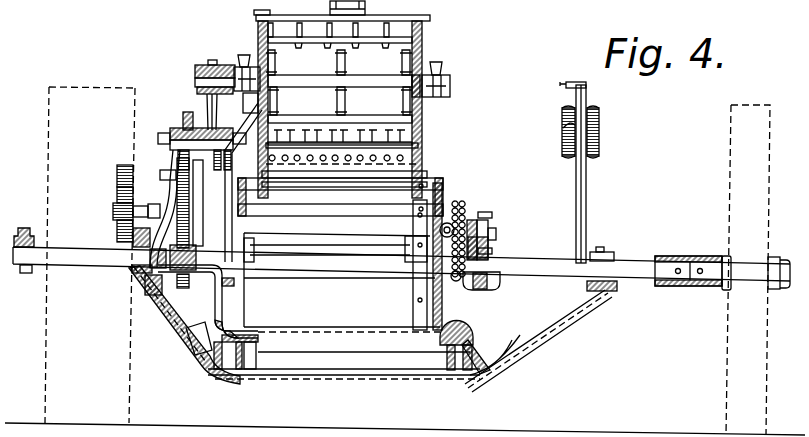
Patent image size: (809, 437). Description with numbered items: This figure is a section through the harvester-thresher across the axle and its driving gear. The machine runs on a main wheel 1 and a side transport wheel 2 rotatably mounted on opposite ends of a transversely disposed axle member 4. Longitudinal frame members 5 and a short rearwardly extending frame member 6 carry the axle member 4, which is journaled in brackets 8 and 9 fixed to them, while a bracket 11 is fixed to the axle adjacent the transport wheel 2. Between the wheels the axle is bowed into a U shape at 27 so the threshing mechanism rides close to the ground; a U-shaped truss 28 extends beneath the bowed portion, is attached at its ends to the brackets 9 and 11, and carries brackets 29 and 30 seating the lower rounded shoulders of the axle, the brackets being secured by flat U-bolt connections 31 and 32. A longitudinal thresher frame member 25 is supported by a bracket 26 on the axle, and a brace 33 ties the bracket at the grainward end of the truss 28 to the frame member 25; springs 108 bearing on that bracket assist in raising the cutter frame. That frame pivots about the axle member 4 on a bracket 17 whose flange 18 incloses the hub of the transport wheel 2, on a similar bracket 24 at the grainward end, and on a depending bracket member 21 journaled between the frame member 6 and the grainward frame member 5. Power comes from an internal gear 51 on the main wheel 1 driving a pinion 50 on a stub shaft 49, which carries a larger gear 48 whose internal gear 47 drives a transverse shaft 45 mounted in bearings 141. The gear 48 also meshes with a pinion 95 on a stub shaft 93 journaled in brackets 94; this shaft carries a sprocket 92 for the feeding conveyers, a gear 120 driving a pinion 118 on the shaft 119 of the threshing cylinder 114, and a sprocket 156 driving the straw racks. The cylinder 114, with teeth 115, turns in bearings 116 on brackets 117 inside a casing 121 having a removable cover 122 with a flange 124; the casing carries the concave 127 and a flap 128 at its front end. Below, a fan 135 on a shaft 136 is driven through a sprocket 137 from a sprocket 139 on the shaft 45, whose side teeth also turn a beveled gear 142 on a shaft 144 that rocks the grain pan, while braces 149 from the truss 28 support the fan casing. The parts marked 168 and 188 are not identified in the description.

The main wheel 1 is at (117, 84).
The side transport wheel 2 is at (731, 141).
The axle member 4 is at (41, 271).
The frame members 5 is at (26, 227).
The frame member 6 is at (158, 252).
The bracket 8 is at (29, 274).
The bracket 9 is at (135, 263).
The bracket 11 is at (610, 254).
The bracket 17 is at (719, 261).
The flange 18 is at (727, 256).
The depending bracket member 21 is at (170, 263).
The bracket 24 is at (782, 257).
The frame member 25 is at (492, 247).
The bracket 26 is at (492, 281).
The bowed portion 27 is at (190, 360).
The truss 28 is at (360, 372).
The bracket 29 is at (213, 370).
The bracket 30 is at (478, 380).
The U-bolt connection 31 is at (222, 296).
The U-bolt connection 32 is at (260, 370).
The brace 33 is at (563, 128).
The transversely disposed shaft 45 is at (492, 230).
The internal gear 47 is at (180, 196).
The gear 48 is at (180, 226).
The stub shaft 49 is at (113, 212).
The pinion 50 is at (117, 196).
The internal gear 51 is at (117, 174).
The sprocket 92 is at (207, 103).
The stub shaft 93 is at (177, 130).
The brackets 94 is at (167, 178).
The pinion 95 is at (183, 112).
The springs 108 is at (602, 143).
The cylinder 114 is at (405, 38).
The teeth 115 is at (258, 24).
The bearings 116 is at (240, 55).
The brackets 117 is at (412, 138).
The pinion 118 is at (197, 70).
The shaft 119 is at (385, 80).
The gear 120 is at (195, 83).
The casing 121 is at (450, 70).
The cover 122 is at (256, 14).
The flange 124 is at (435, 20).
The thresher concave 127 is at (455, 150).
The flap 128 is at (455, 165).
The fan 135 is at (463, 200).
The shaft 136 is at (343, 257).
The sprocket 137 is at (490, 260).
The sprocket 139 is at (497, 234).
The bearings 141 is at (474, 222).
The beveled gear 142 is at (520, 190).
The shaft 144 is at (433, 230).
The braces 149 is at (428, 192).
The sprocket 156 is at (280, 117).
The top block 168 is at (366, 10).
The bearing 188 is at (590, 285).